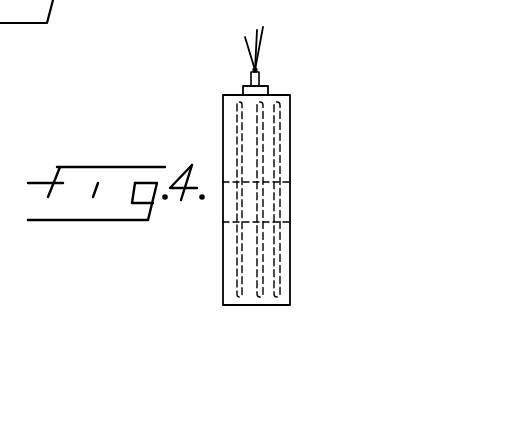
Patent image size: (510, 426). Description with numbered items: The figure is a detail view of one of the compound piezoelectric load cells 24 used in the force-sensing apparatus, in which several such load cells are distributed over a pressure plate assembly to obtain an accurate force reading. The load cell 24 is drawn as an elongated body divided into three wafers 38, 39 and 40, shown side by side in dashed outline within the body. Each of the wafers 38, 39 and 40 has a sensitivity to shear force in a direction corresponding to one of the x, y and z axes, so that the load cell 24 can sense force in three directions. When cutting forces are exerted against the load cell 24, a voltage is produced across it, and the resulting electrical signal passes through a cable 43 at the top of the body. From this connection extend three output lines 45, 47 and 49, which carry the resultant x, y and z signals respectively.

The piezoelectric load cell 24 is at (291, 197).
The wafer 38 is at (238, 264).
The wafer 39 is at (258, 292).
The wafer 40 is at (284, 282).
The cable 43 is at (259, 70).
The output line 45 is at (250, 52).
The output line 47 is at (255, 32).
The output line 49 is at (263, 40).